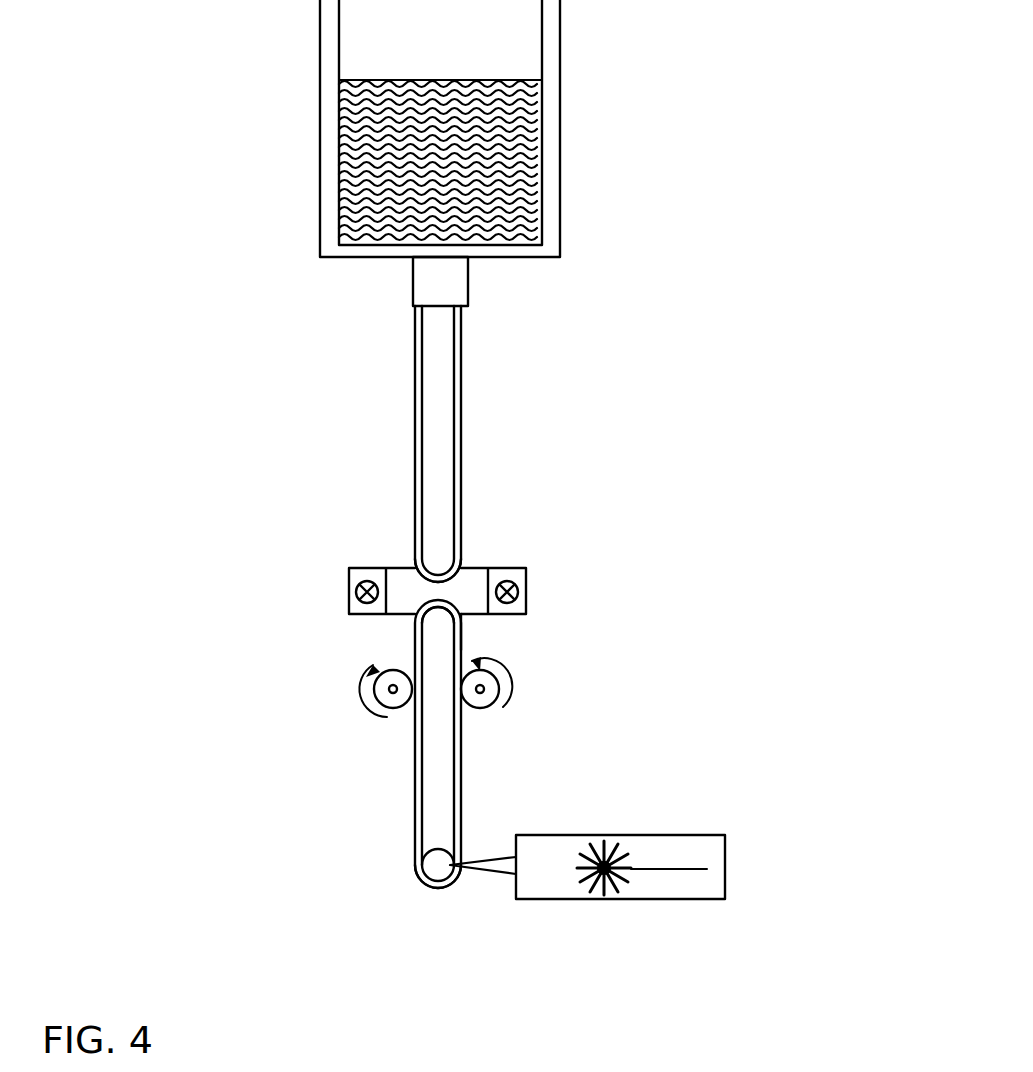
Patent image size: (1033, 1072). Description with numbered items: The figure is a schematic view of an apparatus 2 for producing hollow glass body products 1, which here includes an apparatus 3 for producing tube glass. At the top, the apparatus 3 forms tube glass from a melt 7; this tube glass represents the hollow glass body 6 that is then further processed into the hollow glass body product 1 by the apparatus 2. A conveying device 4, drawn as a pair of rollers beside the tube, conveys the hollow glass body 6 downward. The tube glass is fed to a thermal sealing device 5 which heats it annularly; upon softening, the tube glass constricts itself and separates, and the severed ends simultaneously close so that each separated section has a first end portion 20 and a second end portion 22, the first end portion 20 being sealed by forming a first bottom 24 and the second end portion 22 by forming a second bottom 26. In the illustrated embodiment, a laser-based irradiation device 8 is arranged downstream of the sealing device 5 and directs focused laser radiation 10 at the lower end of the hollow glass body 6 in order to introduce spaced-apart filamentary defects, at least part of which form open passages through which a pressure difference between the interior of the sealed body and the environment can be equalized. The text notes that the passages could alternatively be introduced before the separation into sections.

The hollow glass body product 1 is at (463, 743).
The apparatus 2 is at (761, 334).
The apparatus for producing tube glass 3 is at (562, 172).
The conveying device 4 is at (375, 688).
The thermal sealing device 5 is at (510, 592).
The hollow glass body 6 is at (462, 410).
The melt 7 is at (362, 155).
The laser-based irradiation device 8 is at (725, 853).
The focused laser radiation 10 is at (477, 873).
The first end portion 20 is at (406, 571).
The second end portion 22 is at (477, 628).
The first bottom 24 is at (422, 888).
The second bottom 26 is at (432, 590).